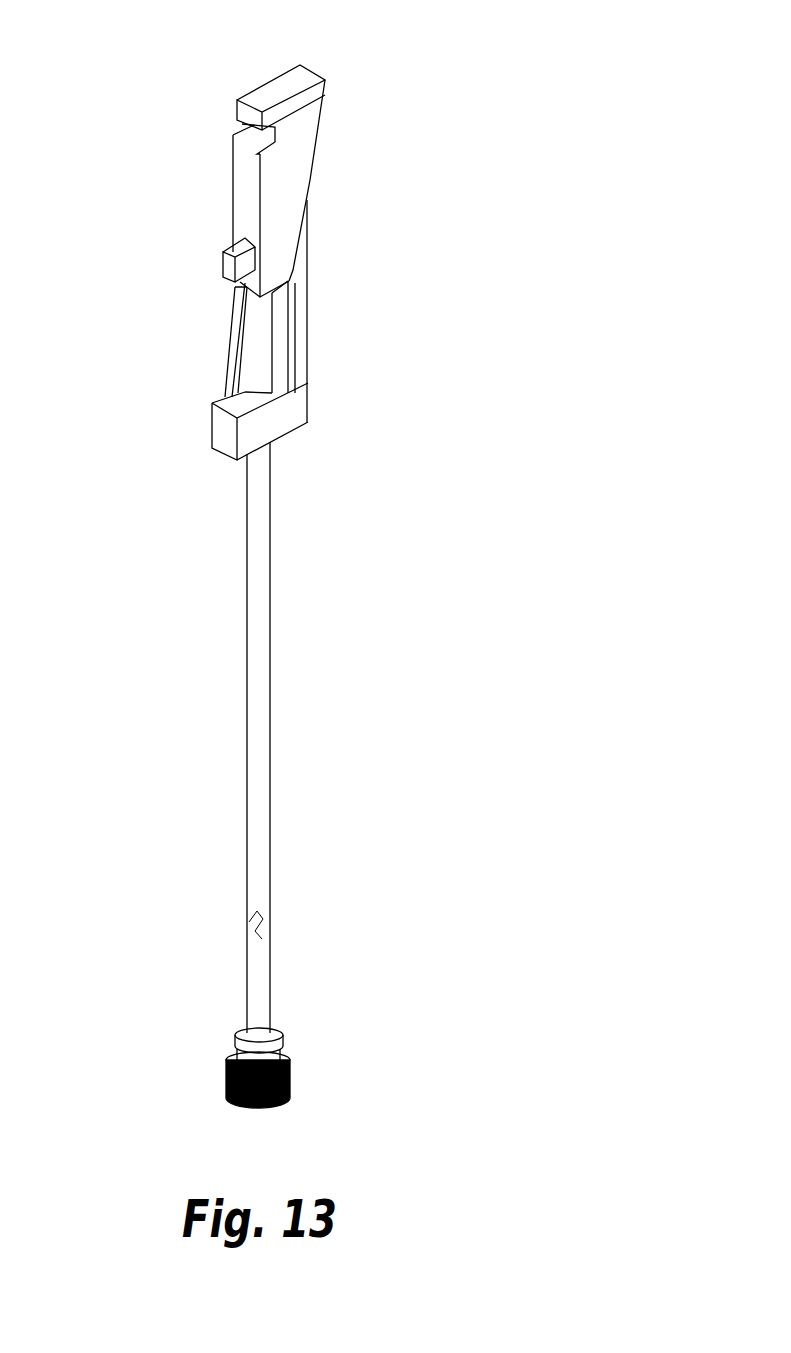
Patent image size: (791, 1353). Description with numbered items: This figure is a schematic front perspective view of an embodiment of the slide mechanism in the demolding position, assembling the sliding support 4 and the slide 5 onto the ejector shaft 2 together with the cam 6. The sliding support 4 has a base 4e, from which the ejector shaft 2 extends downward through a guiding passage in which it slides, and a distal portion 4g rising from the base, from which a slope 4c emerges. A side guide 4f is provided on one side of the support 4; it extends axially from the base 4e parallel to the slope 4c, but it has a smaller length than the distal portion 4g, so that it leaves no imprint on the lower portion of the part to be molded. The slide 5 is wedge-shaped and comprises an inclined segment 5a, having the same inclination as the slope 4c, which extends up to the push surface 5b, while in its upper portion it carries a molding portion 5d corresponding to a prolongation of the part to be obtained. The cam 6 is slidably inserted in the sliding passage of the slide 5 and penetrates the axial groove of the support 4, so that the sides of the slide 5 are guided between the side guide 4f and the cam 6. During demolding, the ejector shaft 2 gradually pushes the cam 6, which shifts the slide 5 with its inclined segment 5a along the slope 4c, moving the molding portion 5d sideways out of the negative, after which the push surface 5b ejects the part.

The ejector shaft 2 is at (270, 697).
The sliding support 4 is at (245, 344).
The slope 4c is at (285, 337).
The base 4e is at (265, 428).
The side guide 4f is at (237, 322).
The distal portion 4g is at (308, 260).
The slide 5 is at (284, 162).
The inclined segment 5a is at (322, 145).
The push surface 5b is at (303, 75).
The molding portion 5d is at (216, 104).
The cam 6 is at (247, 263).